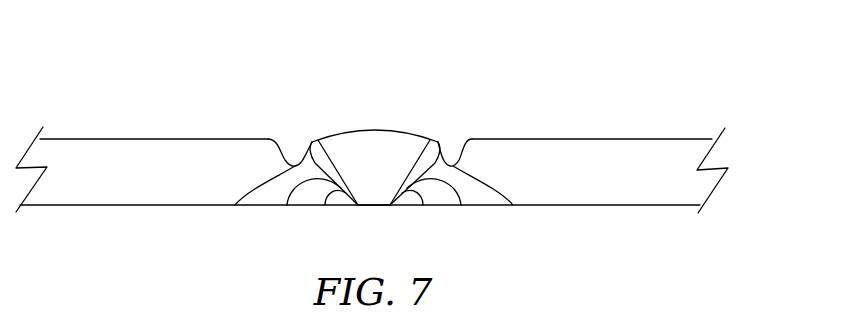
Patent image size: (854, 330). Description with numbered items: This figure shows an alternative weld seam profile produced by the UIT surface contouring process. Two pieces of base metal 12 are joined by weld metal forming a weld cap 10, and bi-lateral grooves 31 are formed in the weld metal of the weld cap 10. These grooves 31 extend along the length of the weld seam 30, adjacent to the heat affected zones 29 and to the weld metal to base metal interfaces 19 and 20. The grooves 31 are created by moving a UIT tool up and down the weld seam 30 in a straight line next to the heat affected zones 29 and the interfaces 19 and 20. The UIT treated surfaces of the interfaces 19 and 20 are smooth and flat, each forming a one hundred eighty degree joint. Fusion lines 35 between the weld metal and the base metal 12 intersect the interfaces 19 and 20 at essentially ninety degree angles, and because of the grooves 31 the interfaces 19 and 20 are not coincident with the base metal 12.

The weld cap 10 is at (354, 144).
The base metal 12 is at (259, 139).
The weld metal to base metal interface 19 is at (315, 130).
The weld metal to base metal interface 20 is at (432, 130).
The heat affected zone 29 is at (287, 205).
The weld seam 30 is at (372, 104).
The bi-lateral groove 31 is at (235, 205).
The fusion line 35 is at (325, 205).